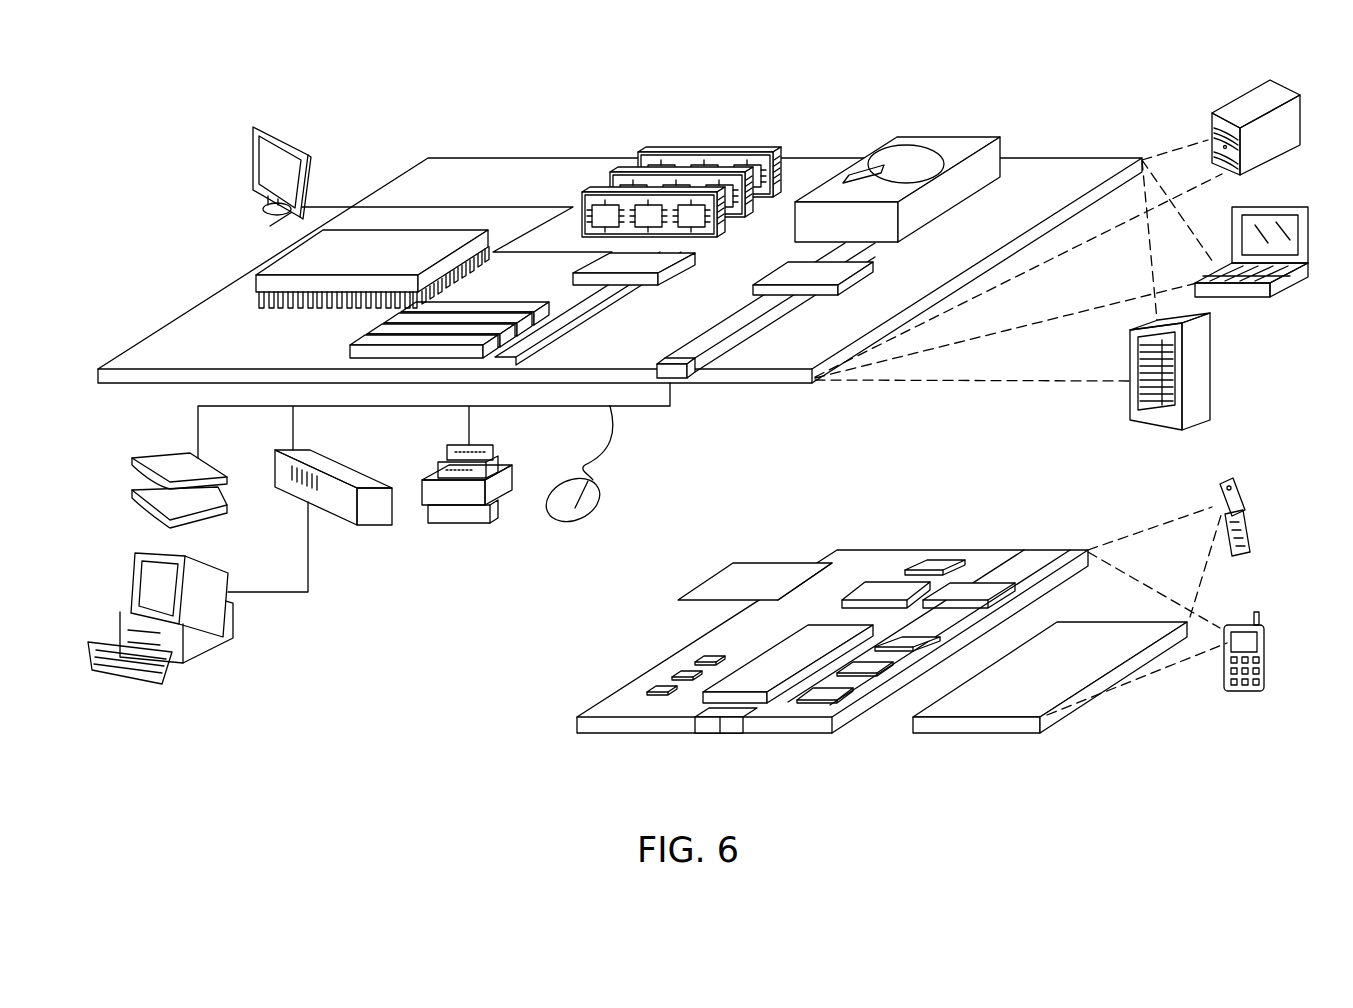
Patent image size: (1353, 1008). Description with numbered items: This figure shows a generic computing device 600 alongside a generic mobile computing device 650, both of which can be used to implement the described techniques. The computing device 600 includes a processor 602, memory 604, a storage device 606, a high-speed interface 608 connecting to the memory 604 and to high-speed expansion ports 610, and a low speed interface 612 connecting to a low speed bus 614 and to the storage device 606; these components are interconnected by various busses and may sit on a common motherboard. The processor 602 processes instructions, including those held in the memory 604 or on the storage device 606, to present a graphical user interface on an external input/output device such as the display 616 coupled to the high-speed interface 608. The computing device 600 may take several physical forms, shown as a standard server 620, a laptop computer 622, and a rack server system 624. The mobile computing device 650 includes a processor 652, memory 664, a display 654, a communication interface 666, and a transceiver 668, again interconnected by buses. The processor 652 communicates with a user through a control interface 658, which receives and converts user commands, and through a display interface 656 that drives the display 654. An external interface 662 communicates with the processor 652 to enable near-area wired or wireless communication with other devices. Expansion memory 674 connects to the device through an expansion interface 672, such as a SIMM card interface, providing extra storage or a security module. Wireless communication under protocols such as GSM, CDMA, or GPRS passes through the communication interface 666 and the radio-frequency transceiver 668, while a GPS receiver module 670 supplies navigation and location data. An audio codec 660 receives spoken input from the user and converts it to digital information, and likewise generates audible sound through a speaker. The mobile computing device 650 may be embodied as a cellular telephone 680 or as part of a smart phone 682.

The computing device 600 is at (383, 112).
The processor 602 is at (281, 258).
The memory 604 is at (712, 150).
The storage device 606 is at (936, 133).
The high-speed interface 608 is at (649, 262).
The high-speed expansion ports 610 is at (380, 335).
The low speed interface 612 is at (786, 268).
The low speed bus 614 is at (676, 358).
The display 616 is at (258, 126).
The standard server 620 is at (1234, 108).
The laptop computer 622 is at (1285, 207).
The rack server system 624 is at (1210, 374).
The mobile computing device 650 is at (537, 734).
The processor 652 is at (757, 672).
The display 654 is at (1089, 637).
The display interface 656 is at (833, 690).
The control interface 658 is at (876, 666).
The audio codec 660 is at (908, 634).
The external interface 662 is at (720, 733).
The memory 664 is at (673, 676).
The communication interface 666 is at (888, 585).
The transceiver 668 is at (978, 582).
The GPS receiver module 670 is at (938, 565).
The expansion interface 672 is at (813, 563).
The expansion memory 674 is at (733, 563).
The cellular telephone 680 is at (1228, 480).
The smart phone 682 is at (1237, 622).